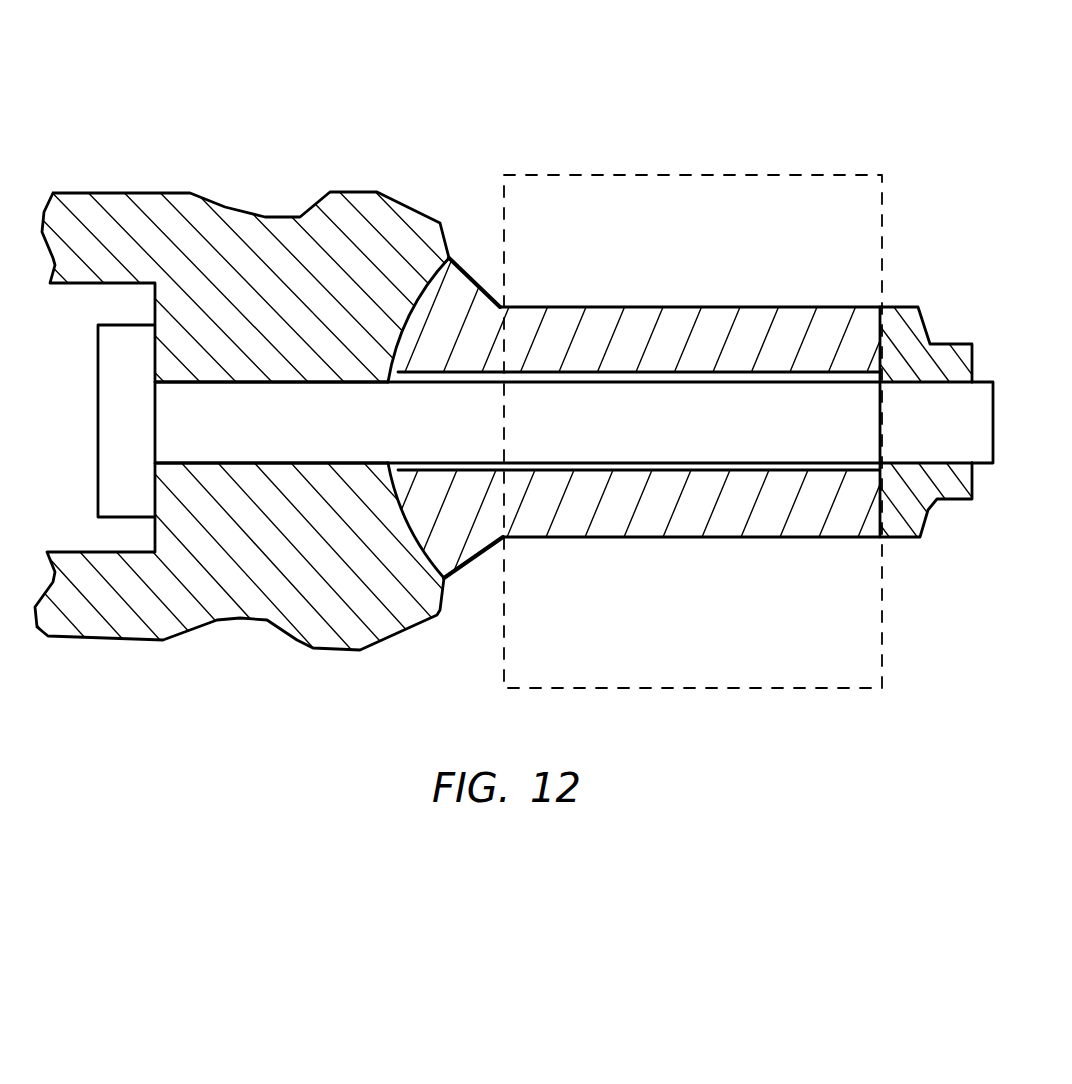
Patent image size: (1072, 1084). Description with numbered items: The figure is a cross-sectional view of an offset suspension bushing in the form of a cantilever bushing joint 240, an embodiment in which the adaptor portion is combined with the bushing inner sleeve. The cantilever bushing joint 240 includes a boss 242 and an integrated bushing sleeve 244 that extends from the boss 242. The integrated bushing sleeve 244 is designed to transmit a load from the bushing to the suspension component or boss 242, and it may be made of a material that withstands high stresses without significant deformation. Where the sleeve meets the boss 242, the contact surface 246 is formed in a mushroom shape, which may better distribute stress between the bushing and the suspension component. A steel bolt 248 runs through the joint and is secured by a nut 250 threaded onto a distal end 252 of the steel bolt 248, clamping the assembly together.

The cantilever bushing joint 240 is at (763, 172).
The boss 242 is at (253, 557).
The integrated bushing sleeve 244 is at (720, 323).
The contact surface 246 is at (413, 553).
The steel bolt 248 is at (380, 442).
The nut 250 is at (943, 490).
The distal end 252 is at (968, 403).